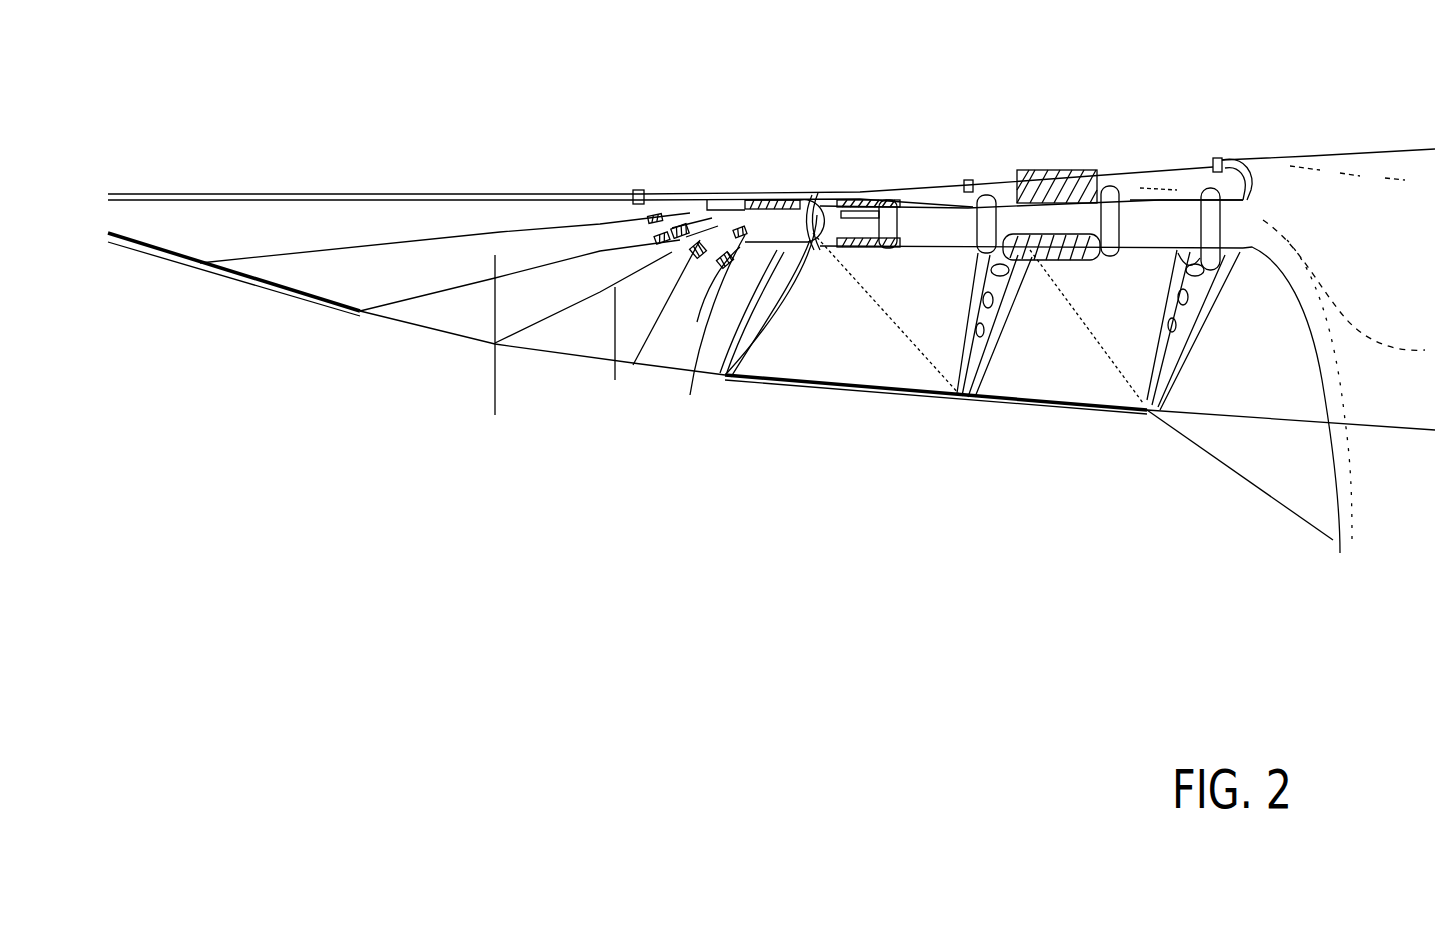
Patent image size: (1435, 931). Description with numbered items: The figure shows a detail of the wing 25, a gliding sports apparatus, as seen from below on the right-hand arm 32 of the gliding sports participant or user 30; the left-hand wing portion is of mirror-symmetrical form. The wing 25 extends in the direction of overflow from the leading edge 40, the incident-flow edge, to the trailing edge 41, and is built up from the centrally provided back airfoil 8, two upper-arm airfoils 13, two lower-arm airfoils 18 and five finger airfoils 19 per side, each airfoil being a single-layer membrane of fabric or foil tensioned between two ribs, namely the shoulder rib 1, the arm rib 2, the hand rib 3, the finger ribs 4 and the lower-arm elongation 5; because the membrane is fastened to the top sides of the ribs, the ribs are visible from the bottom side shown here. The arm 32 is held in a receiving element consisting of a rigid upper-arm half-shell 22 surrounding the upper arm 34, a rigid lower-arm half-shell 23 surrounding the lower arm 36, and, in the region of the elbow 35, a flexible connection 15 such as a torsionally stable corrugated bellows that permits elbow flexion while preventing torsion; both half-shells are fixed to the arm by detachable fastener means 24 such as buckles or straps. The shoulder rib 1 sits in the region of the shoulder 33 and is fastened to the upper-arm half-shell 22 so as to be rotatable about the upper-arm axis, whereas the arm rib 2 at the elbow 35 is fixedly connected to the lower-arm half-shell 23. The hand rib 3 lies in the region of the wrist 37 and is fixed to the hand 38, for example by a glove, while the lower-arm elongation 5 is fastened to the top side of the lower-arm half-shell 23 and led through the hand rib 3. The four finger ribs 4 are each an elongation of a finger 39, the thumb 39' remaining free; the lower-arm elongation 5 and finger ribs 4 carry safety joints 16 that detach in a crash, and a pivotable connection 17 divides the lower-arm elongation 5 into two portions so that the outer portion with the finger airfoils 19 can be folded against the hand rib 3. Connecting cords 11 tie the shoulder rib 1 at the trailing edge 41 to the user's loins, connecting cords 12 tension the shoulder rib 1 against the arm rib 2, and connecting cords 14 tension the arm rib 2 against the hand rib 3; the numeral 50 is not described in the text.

The leading edge 40 is at (305, 193).
The lower-arm elongation 5 is at (435, 193).
The safety joints 16 is at (637, 190).
The pivotable connection 17 is at (722, 192).
The finger 39 is at (606, 251).
The thumb 39' is at (712, 321).
The hand 38 is at (753, 213).
The wrist 37 is at (818, 192).
The lower arm 36 is at (930, 228).
The lower-arm half-shell 23 is at (953, 200).
The elbow 35 is at (1062, 212).
The flexible connection 15 is at (1060, 190).
The fastener means 24 is at (1110, 188).
The upper-arm half-shell 22 is at (1162, 180).
The upper arm 34 is at (1168, 222).
The shoulder 33 is at (1283, 178).
The gliding sports participant or user 30 is at (1427, 298).
The arm 32 is at (1155, 249).
The trailing edge 41 is at (287, 296).
The panel 50 is at (157, 252).
The wing 25 is at (380, 362).
The finger airfoils 19 is at (495, 415).
The finger ribs 4 is at (615, 380).
The hand rib 3 is at (778, 235).
The lower-arm airfoils 18 is at (850, 333).
The connecting cords 14 is at (891, 320).
The arm rib 2 is at (996, 347).
The upper-arm airfoils 13 is at (1061, 343).
The connecting cords 12 is at (1096, 337).
The shoulder rib 1 is at (1182, 250).
The connecting cords 11 is at (1253, 483).
The back airfoil 8 is at (1290, 360).